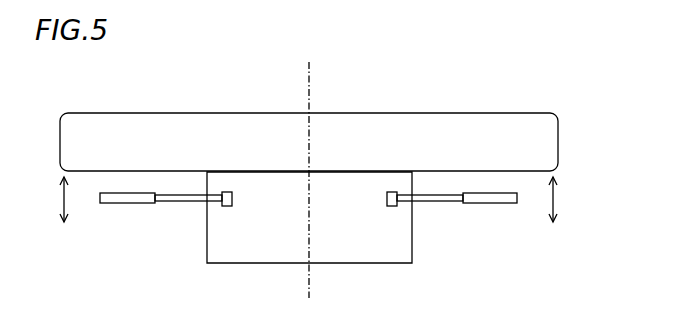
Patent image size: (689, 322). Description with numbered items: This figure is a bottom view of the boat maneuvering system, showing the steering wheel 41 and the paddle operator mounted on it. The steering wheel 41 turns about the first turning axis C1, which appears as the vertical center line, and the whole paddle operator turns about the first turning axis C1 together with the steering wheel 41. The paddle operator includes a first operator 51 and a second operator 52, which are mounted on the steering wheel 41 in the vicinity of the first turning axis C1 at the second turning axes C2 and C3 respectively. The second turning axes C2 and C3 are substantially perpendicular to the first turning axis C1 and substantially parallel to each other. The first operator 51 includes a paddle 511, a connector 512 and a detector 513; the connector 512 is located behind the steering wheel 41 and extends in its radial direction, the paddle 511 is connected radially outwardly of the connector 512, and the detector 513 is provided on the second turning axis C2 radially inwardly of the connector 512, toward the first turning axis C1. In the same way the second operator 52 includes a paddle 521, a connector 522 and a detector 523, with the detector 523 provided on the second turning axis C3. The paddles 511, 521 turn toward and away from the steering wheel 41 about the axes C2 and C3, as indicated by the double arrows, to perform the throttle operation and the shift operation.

The steering wheel 41 is at (559, 132).
The first turning axis C1 is at (312, 86).
The second turning axis C2 is at (386, 200).
The second turning axis C3 is at (233, 200).
The first operator 51 is at (463, 222).
The paddle 511 is at (510, 204).
The connector 512 is at (427, 202).
The detector 513 is at (392, 208).
The second operator 52 is at (157, 222).
The paddle 521 is at (110, 204).
The connector 522 is at (191, 202).
The detector 523 is at (229, 208).